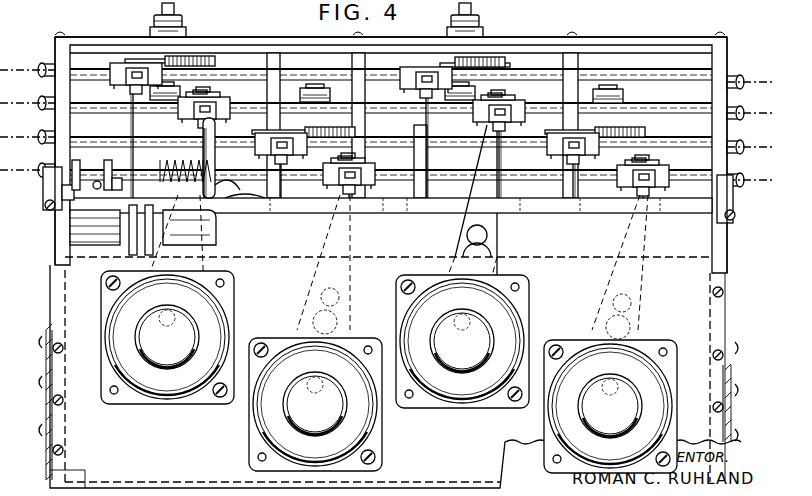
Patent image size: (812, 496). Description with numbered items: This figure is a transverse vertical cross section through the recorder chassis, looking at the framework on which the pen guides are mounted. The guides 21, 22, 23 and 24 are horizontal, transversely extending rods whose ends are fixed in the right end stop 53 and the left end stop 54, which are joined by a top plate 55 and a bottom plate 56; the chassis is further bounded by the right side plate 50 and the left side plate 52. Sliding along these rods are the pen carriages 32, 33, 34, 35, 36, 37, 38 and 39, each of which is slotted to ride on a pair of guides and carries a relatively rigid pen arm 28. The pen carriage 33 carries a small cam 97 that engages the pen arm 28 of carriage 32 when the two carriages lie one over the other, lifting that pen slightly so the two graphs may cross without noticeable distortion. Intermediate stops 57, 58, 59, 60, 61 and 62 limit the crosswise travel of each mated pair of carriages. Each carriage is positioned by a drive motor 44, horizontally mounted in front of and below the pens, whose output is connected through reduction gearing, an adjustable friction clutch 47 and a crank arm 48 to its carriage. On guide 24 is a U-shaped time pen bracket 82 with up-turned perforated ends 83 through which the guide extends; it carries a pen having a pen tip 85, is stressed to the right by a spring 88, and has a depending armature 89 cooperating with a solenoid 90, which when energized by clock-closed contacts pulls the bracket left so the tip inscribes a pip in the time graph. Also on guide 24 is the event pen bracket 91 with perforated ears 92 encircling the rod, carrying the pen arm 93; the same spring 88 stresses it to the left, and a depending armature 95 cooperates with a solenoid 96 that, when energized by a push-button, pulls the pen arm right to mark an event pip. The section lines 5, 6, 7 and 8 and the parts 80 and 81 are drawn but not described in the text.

The section line 5 is at (17, 65).
The section line 6 is at (17, 98).
The section line 7 is at (17, 132).
The section line 8 is at (17, 165).
The guide 21 is at (690, 80).
The guide 22 is at (695, 113).
The guide 23 is at (698, 147).
The guide 24 is at (700, 178).
The pen arm 28 is at (126, 96).
The pen carriage 32 is at (110, 65).
The pen carriage 33 is at (184, 115).
The pen carriage 34 is at (212, 152).
The pen carriage 35 is at (368, 184).
The pen carriage 36 is at (400, 67).
The pen carriage 37 is at (478, 115).
The pen carriage 38 is at (552, 150).
The pen carriage 39 is at (670, 183).
The motor 44 is at (271, 420).
The adjustable friction clutch 47 is at (215, 62).
The crank arm 48 is at (137, 59).
The right side plate 50 is at (733, 407).
The left side plate 52 is at (45, 405).
The right end stop 53 is at (713, 58).
The left end stop 54 is at (64, 60).
The top plate 55 is at (508, 40).
The bottom plate 56 is at (582, 210).
The intermediate stop 57 is at (280, 62).
The intermediate stop 58 is at (352, 62).
The intermediate stop 59 is at (578, 62).
The intermediate stop 60 is at (240, 188).
The intermediate stop 61 is at (428, 191).
The intermediate stop 62 is at (505, 191).
The bracket 80 is at (44, 183).
The screw 81 is at (44, 205).
The time pen bracket 82 is at (117, 178).
The up-turned perforated ends 83 is at (110, 162).
The pen tip 85 is at (245, 202).
The spring 88 is at (172, 158).
The armature 89 is at (133, 255).
The solenoid 90 is at (82, 228).
The event pen bracket 91 is at (70, 195).
The perforated ears 92 is at (76, 164).
The pen arm 93 is at (98, 180).
The armature 95 is at (149, 255).
The solenoid 96 is at (216, 241).
The cam 97 is at (220, 94).